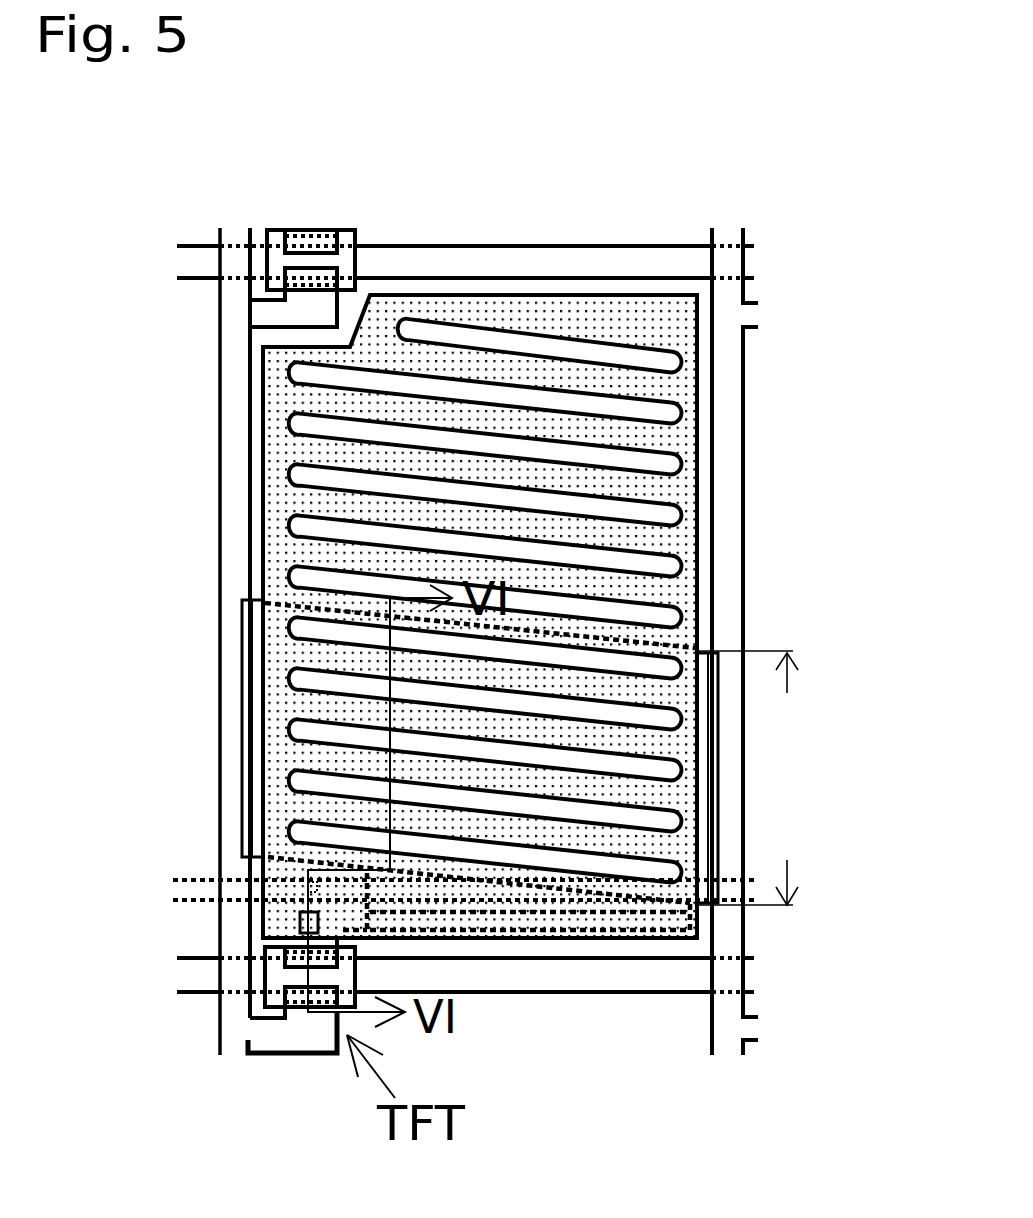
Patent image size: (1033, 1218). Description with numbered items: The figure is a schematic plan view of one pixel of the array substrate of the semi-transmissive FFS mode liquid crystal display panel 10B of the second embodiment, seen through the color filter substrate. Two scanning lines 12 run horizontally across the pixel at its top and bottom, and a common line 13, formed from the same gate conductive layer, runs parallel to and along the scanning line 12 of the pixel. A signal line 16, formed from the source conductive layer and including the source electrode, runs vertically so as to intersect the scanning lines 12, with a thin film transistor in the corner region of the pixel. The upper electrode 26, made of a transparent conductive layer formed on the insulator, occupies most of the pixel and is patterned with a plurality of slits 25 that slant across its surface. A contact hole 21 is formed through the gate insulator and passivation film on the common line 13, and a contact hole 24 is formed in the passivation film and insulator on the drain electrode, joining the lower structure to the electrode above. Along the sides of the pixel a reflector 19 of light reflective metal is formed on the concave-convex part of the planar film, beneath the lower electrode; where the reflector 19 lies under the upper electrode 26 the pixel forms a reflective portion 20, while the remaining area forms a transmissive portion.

The semi-transmissive FFS mode liquid crystal display panel 10B is at (208, 178).
The scanning line 12 is at (660, 256).
The common line 13 is at (258, 883).
The signal line 16 is at (236, 402).
The reflector 19 is at (263, 707).
The reflective portion 20 is at (797, 778).
The contact hole 21 is at (303, 880).
The contact hole 24 is at (300, 928).
The slit 25 is at (608, 457).
The upper electrode 26 is at (303, 507).